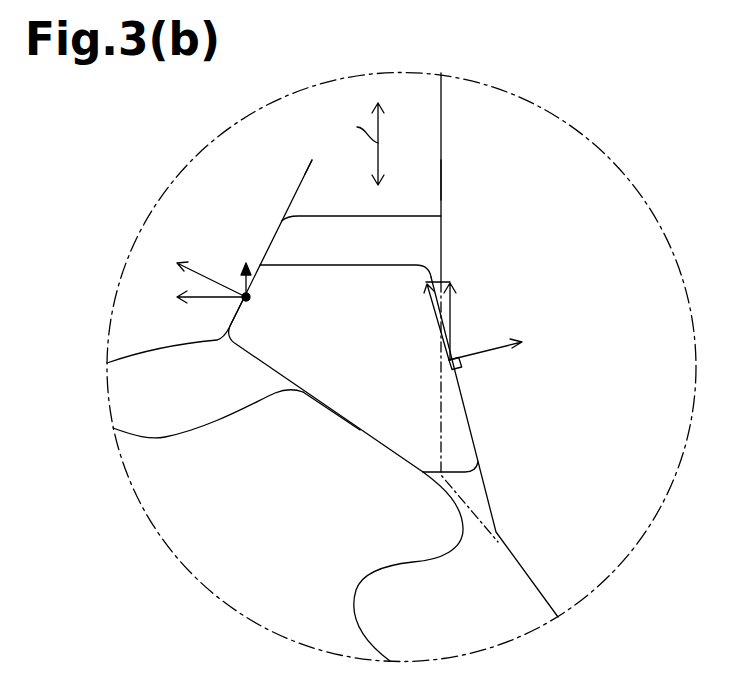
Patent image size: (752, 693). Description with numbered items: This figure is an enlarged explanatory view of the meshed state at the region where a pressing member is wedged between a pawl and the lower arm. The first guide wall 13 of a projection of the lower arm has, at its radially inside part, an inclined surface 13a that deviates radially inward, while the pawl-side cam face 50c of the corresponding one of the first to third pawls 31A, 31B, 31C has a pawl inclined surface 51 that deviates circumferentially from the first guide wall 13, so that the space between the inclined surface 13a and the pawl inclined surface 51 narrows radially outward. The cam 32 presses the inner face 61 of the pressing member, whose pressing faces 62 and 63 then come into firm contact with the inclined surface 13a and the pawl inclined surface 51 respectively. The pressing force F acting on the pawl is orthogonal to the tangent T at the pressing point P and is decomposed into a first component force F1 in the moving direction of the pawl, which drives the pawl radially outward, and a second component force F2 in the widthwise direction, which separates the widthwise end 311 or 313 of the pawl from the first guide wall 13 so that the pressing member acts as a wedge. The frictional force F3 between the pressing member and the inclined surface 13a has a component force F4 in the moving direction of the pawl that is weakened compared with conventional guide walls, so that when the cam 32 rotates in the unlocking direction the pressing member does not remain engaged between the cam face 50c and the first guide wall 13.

The first guide wall 13 is at (431, 177).
The inclined surface 13a is at (467, 438).
The first pawl 31A is at (496, 177).
The second pawl 31B is at (496, 177).
The third pawl 31C is at (427, 136).
The widthwise end 311 is at (510, 180).
The widthwise end 313 is at (442, 170).
The cam 32 is at (417, 560).
The pawl-side cam face 50c is at (273, 242).
The pawl inclined surface 51 is at (238, 315).
The inner face 61 is at (358, 428).
The pressing face 62 is at (468, 405).
The pressing face 63 is at (229, 328).
The pressing point P is at (249, 303).
The tangent T is at (298, 178).
The pressing force F is at (202, 273).
The first component force F1 is at (248, 282).
The second component force F2 is at (205, 300).
The frictional force F3 is at (433, 314).
The component force F4 is at (452, 312).